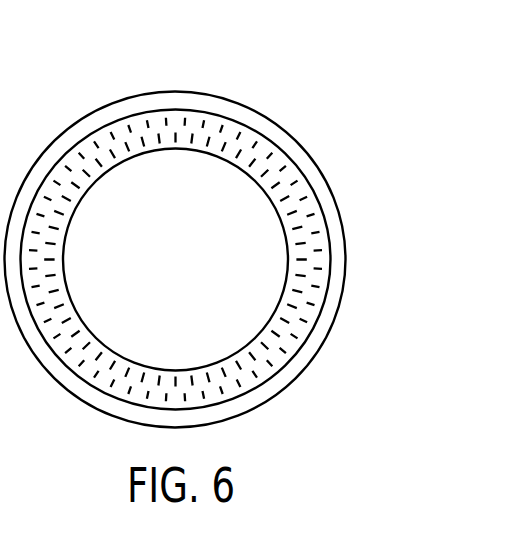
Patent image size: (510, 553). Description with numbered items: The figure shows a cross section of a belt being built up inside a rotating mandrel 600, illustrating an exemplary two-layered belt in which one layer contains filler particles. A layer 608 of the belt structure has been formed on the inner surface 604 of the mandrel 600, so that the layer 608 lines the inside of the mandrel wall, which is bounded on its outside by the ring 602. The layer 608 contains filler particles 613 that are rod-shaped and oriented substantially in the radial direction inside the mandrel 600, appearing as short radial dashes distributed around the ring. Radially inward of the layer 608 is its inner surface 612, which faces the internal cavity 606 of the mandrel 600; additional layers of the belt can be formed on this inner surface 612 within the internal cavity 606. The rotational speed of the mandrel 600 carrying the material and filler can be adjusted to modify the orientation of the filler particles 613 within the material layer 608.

The mandrel 600 is at (201, 243).
The outer layer 602 is at (257, 102).
The inner surface 604 is at (200, 110).
The internal cavity 606 is at (238, 310).
The layer 608 is at (102, 380).
The inner surface 612 is at (144, 155).
The filler particles 613 is at (115, 135).